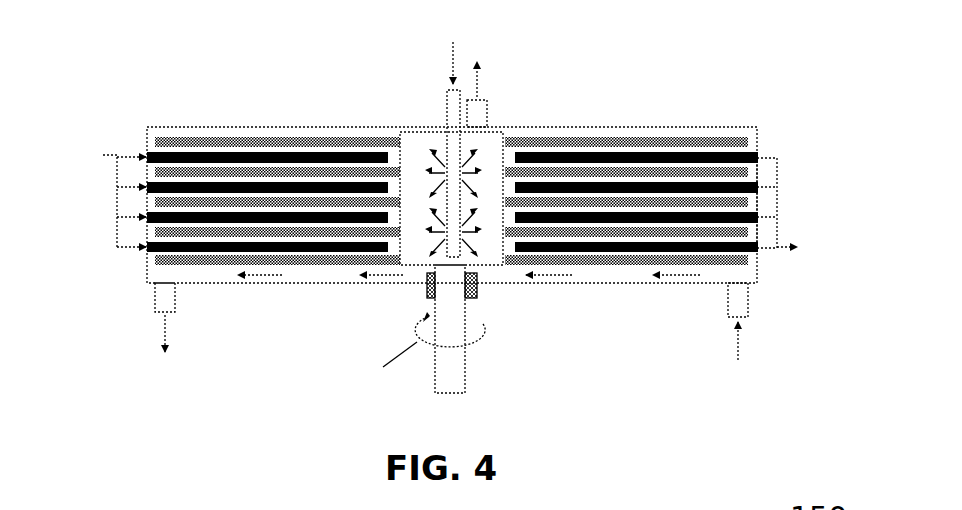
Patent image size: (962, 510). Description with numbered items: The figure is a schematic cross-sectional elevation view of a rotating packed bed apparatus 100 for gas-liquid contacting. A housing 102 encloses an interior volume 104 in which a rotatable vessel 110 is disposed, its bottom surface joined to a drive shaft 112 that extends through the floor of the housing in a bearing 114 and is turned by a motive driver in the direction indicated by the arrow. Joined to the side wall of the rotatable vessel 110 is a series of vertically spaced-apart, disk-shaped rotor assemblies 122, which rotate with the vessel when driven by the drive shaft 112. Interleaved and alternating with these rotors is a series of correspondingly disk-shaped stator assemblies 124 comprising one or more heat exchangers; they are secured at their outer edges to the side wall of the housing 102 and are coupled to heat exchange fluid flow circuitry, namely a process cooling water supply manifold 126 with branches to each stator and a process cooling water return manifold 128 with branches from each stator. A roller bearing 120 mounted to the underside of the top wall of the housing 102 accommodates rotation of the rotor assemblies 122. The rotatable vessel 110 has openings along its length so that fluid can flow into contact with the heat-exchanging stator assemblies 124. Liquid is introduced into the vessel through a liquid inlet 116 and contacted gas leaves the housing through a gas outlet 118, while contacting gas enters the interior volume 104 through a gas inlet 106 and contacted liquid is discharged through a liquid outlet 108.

The rotating packed bed apparatus 100 is at (252, 78).
The housing 102 is at (282, 285).
The interior volume 104 is at (613, 277).
The gas inlet 106 is at (748, 298).
The liquid outlet 108 is at (152, 298).
The rotatable vessel 110 is at (489, 268).
The drive shaft 112 is at (453, 370).
The bearing 114 is at (424, 290).
The liquid inlet 116 is at (450, 109).
The gas outlet 118 is at (477, 118).
The roller bearing 120 is at (395, 134).
The rotor assemblies 122 is at (648, 143).
The stator assemblies 124 is at (730, 182).
The process cooling water supply manifold 126 is at (112, 203).
The process cooling water return manifold 128 is at (778, 200).